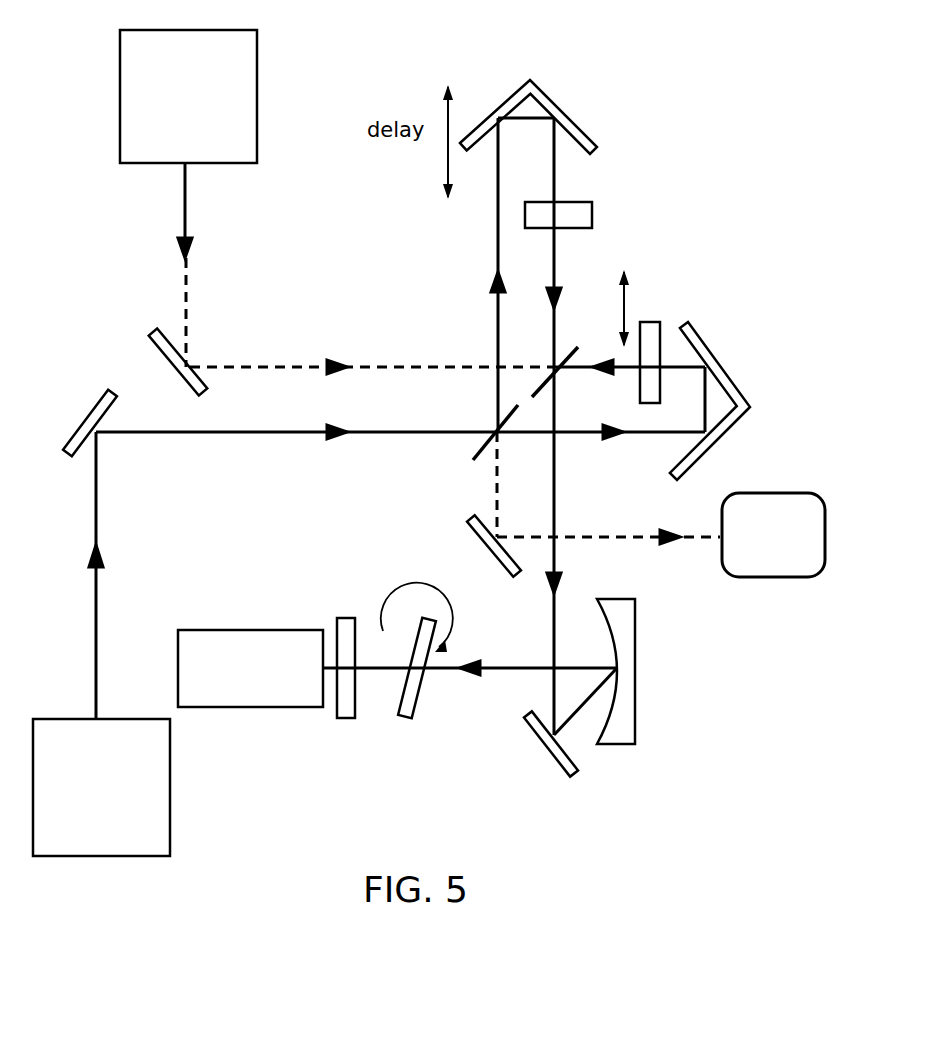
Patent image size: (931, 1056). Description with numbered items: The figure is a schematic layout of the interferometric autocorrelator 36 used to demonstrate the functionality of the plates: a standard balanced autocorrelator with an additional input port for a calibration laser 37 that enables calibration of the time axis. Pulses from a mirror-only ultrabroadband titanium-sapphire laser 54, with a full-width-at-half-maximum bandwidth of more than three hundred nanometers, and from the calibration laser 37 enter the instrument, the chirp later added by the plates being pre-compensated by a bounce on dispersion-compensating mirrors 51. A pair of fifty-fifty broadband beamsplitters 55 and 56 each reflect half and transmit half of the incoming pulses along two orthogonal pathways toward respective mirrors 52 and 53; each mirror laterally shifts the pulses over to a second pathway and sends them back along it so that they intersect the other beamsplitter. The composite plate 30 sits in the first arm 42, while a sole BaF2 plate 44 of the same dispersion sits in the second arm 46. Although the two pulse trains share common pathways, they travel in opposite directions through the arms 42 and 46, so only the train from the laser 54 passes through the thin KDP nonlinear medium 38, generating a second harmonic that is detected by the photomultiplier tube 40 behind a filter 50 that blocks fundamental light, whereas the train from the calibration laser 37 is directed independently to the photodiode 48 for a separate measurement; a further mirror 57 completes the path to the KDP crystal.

The autocorrelator 36 is at (153, 88).
The calibration laser 37 is at (188, 96).
The dispersion-compensating mirrors 51 is at (156, 345).
The titanium-sapphire laser 54 is at (101, 787).
The mirror 53 is at (550, 93).
The second arm 46 is at (466, 245).
The BaF2 plate 44 is at (583, 229).
The composite plate 30 is at (650, 320).
The mirror 52 is at (742, 396).
The broadband beamsplitter 55 is at (573, 344).
The broadband beamsplitter 56 is at (470, 456).
The first arm 42 is at (633, 461).
The photodiode 48 is at (773, 578).
The concave mirror 57 is at (618, 746).
The photomultiplier tube 40 is at (250, 638).
The filter 50 is at (345, 616).
The nonlinear medium 38 is at (425, 696).